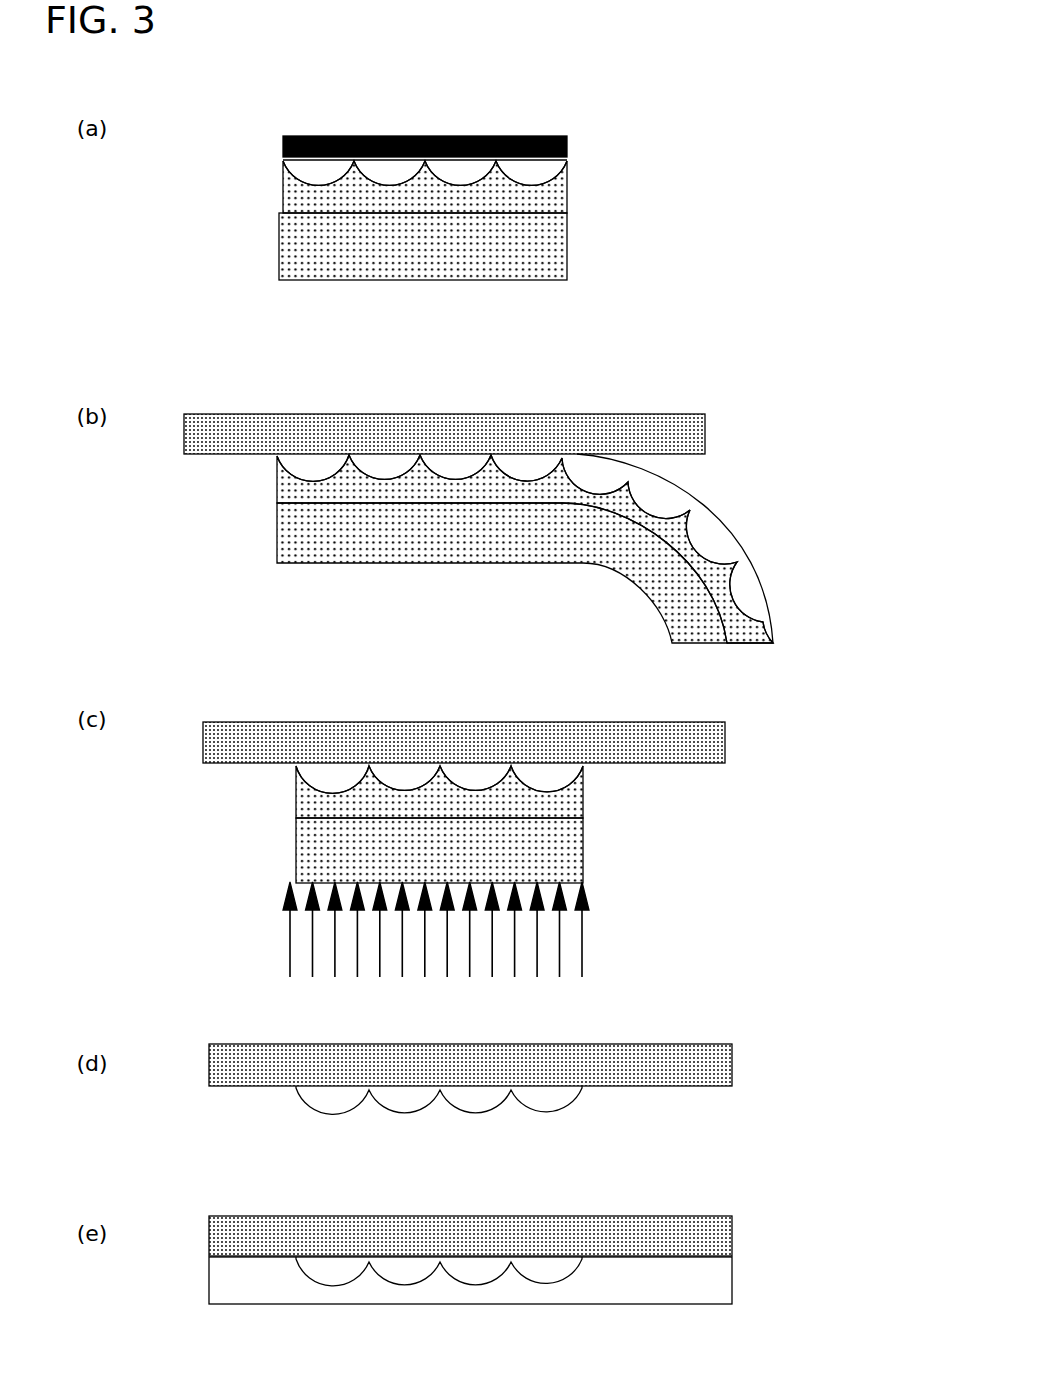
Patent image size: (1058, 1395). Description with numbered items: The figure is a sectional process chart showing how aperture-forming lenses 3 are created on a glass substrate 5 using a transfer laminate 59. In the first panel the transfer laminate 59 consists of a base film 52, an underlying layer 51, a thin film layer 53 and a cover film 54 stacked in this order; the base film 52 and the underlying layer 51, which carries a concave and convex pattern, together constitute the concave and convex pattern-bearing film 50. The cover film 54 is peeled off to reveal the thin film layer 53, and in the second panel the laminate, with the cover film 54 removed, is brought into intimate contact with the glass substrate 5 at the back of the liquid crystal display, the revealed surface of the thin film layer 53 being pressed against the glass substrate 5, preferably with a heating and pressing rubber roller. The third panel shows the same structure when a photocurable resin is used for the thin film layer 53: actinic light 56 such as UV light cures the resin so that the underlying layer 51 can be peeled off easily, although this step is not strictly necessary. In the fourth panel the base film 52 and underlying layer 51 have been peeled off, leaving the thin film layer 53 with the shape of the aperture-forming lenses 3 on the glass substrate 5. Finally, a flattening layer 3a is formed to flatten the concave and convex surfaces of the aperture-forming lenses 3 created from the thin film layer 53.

The aperture-forming lens 3 is at (582, 1092).
The flattening layer 3a is at (603, 1290).
The glass substrate 5 is at (705, 435).
The concave and convex pattern-bearing film 50 is at (725, 223).
The underlying layer 51 is at (558, 193).
The base film 52 is at (567, 257).
The thin film layer 53 is at (548, 166).
The cover film 54 is at (567, 141).
The actinic light 56 is at (583, 938).
The transfer laminate 59 is at (793, 317).